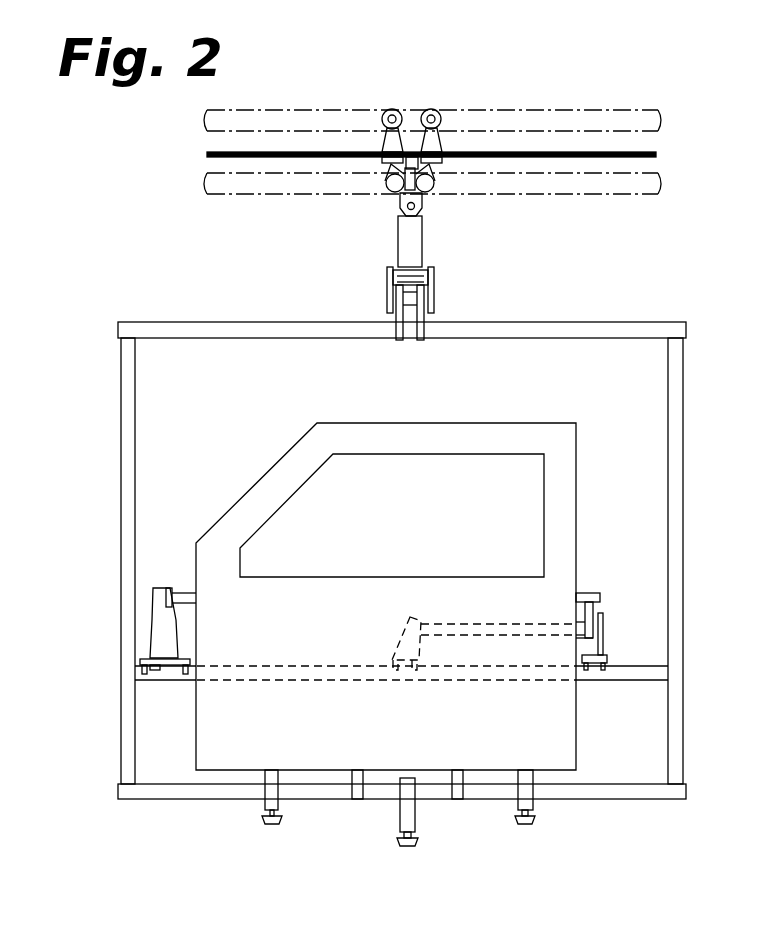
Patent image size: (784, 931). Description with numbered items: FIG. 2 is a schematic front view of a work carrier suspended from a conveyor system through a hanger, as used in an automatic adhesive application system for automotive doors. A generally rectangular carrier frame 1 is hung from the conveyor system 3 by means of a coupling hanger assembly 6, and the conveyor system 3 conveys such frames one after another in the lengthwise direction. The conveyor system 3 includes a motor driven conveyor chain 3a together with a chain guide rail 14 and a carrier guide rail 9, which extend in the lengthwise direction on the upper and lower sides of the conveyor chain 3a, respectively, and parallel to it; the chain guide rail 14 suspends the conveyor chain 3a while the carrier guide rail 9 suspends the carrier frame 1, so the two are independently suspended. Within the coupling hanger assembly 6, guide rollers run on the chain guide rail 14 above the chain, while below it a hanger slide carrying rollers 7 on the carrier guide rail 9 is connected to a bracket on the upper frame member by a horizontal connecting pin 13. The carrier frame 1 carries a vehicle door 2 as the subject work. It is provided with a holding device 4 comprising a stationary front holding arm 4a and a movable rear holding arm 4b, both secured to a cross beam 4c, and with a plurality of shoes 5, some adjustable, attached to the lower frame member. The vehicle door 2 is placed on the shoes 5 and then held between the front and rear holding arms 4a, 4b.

The carrier frame 1 is at (686, 412).
The vehicle door 2 is at (555, 434).
The conveyor system 3 is at (458, 97).
The conveyor chain 3a is at (654, 152).
The holding device 4 is at (590, 592).
The front holding arm 4a is at (162, 588).
The rear holding arm 4b is at (600, 593).
The cross beam 4c is at (612, 681).
The shoes 5 is at (268, 793).
The coupling hanger assembly 6 is at (386, 281).
The guide wheels 7 is at (388, 187).
The carrier guide rail 9 is at (610, 196).
The connecting pin 13 is at (422, 203).
The chain guide rail 14 is at (610, 108).